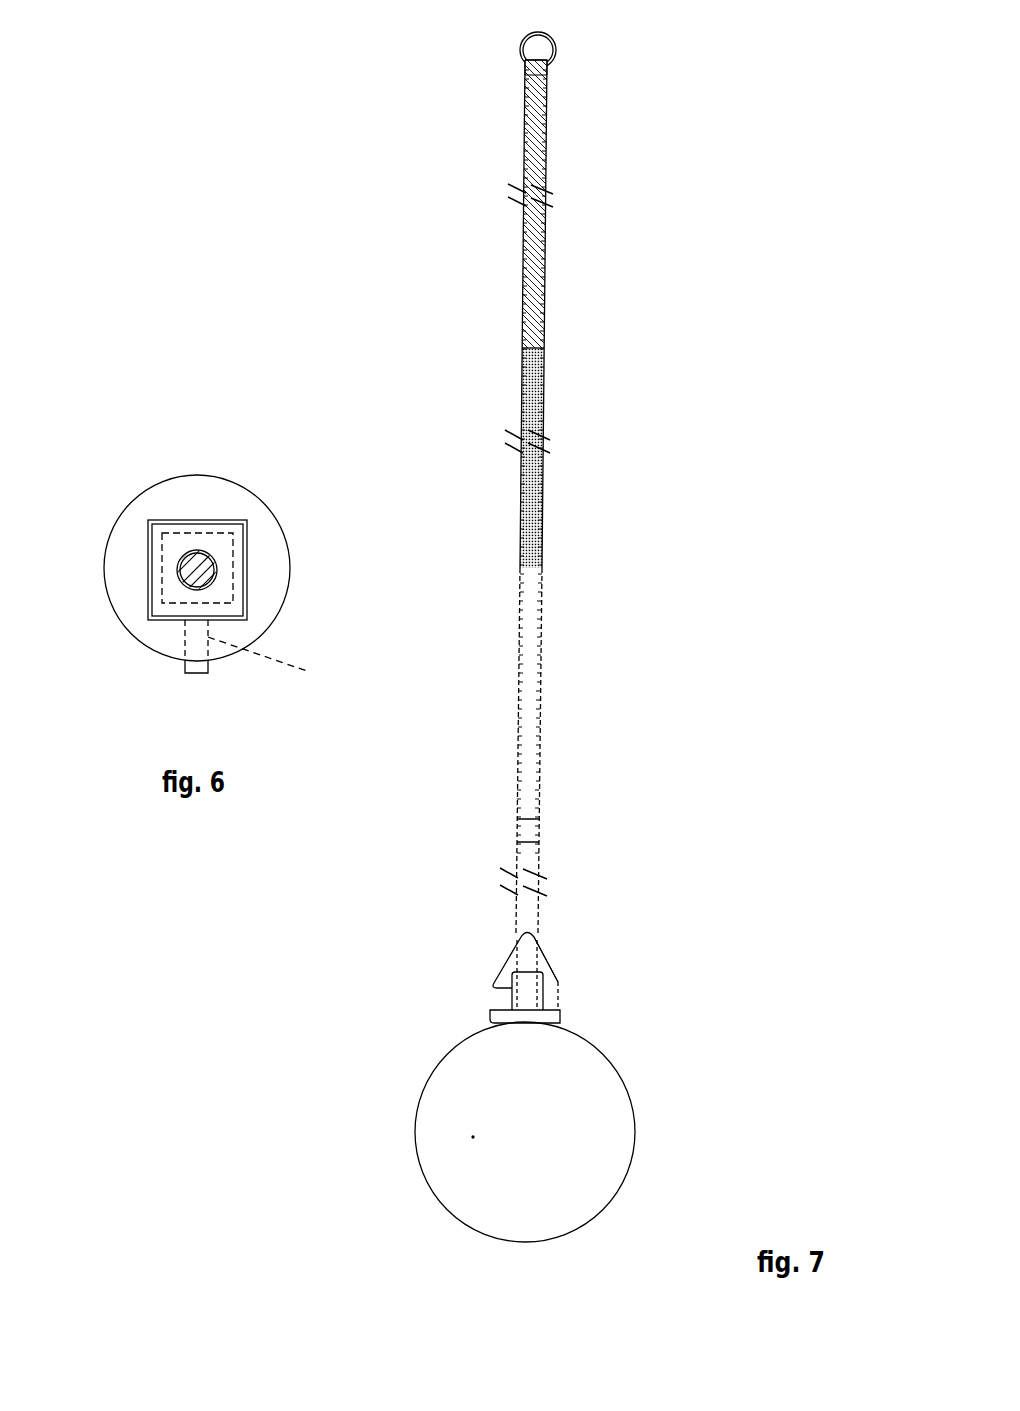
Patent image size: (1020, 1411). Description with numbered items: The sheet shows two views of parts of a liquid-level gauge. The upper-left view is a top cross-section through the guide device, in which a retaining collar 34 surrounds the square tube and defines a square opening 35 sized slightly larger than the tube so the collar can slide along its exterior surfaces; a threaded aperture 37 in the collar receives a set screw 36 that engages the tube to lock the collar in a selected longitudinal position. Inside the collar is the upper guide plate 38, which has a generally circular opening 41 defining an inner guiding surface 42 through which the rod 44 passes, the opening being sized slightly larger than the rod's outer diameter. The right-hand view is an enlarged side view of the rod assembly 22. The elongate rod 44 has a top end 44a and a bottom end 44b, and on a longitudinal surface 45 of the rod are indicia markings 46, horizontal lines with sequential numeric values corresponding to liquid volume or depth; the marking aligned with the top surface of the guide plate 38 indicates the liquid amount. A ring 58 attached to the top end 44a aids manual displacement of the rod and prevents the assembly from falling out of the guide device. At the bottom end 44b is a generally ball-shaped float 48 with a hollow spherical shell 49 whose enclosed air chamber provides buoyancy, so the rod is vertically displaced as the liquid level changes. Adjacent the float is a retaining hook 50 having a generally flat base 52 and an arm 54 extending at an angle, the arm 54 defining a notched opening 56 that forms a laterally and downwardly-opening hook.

In FIG. 7, the rod assembly 22 is at (590, 619).
In FIG. 6, the retaining collar 34 is at (267, 508).
In FIG. 6, the square opening 35 is at (247, 580).
In FIG. 6, the set screw 36 is at (198, 673).
In FIG. 6, the threaded aperture 37 is at (276, 666).
In FIG. 6, the guide plate 38 is at (192, 523).
In FIG. 6, the circular opening 41 is at (207, 557).
In FIG. 6, the inner guiding surface 42 is at (190, 563).
In FIG. 6, the elongate rod 44 is at (197, 577).
In FIG. 7, the elongate rod 44 is at (545, 308).
In FIG. 7, the top end of rod 44a is at (527, 73).
In FIG. 7, the bottom end of rod 44b is at (525, 993).
In FIG. 7, the longitudinal surface 45 is at (538, 348).
In FIG. 7, the indicia markings 46 is at (543, 230).
In FIG. 7, the float 48 is at (632, 1147).
In FIG. 7, the spherical shell 49 is at (472, 1138).
In FIG. 7, the retaining hook 50 is at (502, 963).
In FIG. 7, the base 52 is at (540, 1022).
In FIG. 7, the arm 54 is at (535, 957).
In FIG. 7, the notched opening 56 is at (507, 998).
In FIG. 7, the ring 58 is at (553, 45).